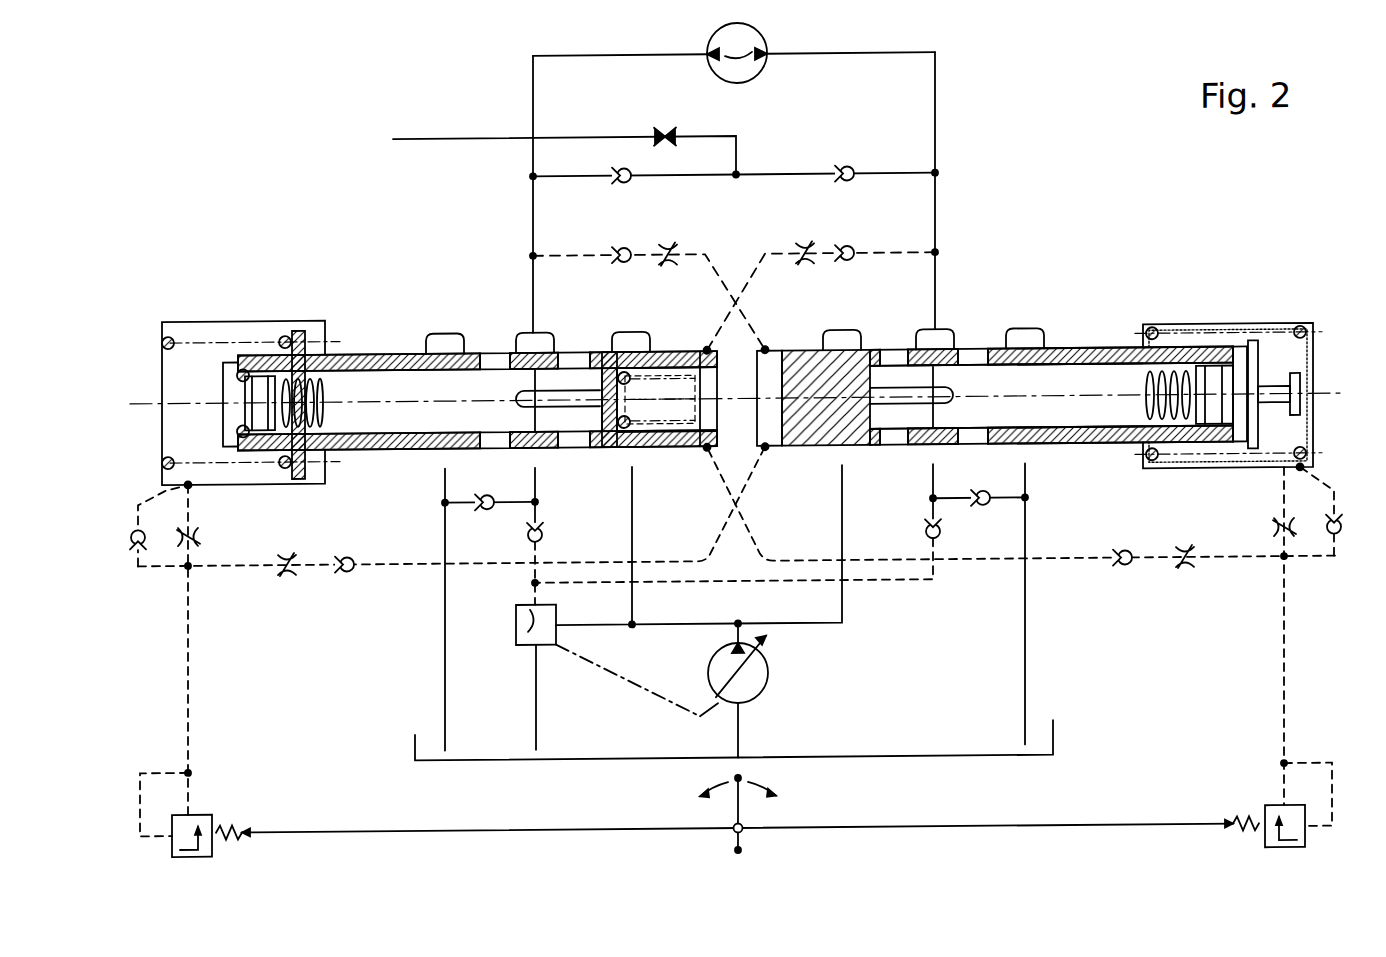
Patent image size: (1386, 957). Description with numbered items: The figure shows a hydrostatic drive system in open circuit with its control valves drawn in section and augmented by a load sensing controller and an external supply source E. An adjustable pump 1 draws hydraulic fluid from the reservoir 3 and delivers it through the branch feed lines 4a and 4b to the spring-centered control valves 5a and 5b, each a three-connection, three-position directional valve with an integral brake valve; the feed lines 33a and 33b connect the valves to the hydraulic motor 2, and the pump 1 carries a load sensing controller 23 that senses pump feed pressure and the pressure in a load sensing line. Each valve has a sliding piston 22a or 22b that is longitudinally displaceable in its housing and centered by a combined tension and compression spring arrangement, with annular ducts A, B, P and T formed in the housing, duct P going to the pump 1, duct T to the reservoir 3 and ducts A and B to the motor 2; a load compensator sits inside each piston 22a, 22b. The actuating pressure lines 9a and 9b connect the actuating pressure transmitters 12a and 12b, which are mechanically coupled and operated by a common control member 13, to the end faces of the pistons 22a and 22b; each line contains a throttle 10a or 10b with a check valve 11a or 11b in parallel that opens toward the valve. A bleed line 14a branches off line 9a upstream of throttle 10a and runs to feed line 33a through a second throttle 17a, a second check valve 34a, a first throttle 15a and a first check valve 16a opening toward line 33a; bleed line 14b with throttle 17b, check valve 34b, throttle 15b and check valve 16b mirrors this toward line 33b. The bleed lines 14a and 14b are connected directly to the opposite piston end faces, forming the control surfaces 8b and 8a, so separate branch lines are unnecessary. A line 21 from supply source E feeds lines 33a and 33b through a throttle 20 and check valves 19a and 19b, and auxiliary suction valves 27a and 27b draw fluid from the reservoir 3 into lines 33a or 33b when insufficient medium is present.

The pump 1 is at (712, 680).
The hydraulic motor 2 is at (760, 66).
The reservoir 3 is at (875, 757).
The branch feed line 4a is at (632, 548).
The branch feed line 4b is at (842, 548).
The control valve 5a is at (408, 330).
The control valve 5b is at (1063, 328).
The control surface 8a is at (705, 348).
The control surface 8b is at (770, 348).
The actuating pressure line 9a is at (188, 678).
The actuating pressure line 9b is at (1284, 670).
The throttle 10a is at (200, 535).
The throttle 10b is at (1272, 534).
The check valve 11a is at (138, 548).
The check valve 11b is at (1340, 548).
The actuating pressure transmitter 12a is at (212, 810).
The actuating pressure transmitter 12b is at (1265, 810).
The control member 13 is at (745, 818).
The bleed line 14a is at (582, 262).
The bleed line 14b is at (880, 262).
The first throttle 15a is at (668, 246).
The first throttle 15b is at (805, 246).
The first check valve 16a is at (624, 246).
The first check valve 16b is at (847, 246).
The second throttle 17a is at (290, 552).
The second throttle 17b is at (1185, 550).
The check valve 19a is at (618, 183).
The check valve 19b is at (850, 165).
The throttle 20 is at (667, 128).
The line 21 is at (512, 136).
The sliding piston 22a is at (352, 350).
The sliding piston 22b is at (1125, 350).
The load sensing controller 23 is at (516, 622).
The auxiliary suction valve 27a is at (482, 508).
The auxiliary suction valve 27b is at (990, 507).
The feed line 33a is at (533, 228).
The feed line 33b is at (935, 125).
The second check valve 34a is at (352, 552).
The second check valve 34b is at (1122, 552).